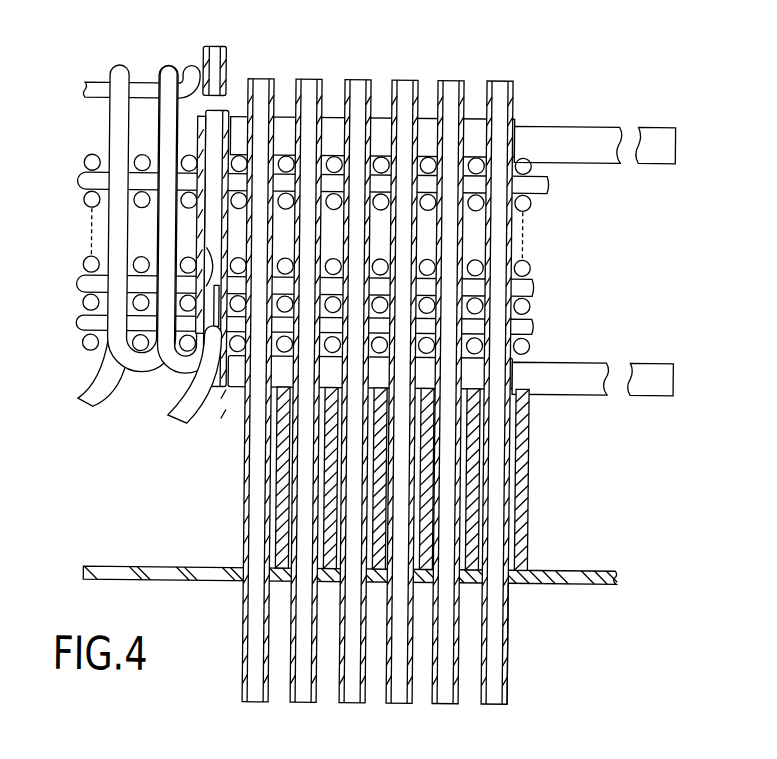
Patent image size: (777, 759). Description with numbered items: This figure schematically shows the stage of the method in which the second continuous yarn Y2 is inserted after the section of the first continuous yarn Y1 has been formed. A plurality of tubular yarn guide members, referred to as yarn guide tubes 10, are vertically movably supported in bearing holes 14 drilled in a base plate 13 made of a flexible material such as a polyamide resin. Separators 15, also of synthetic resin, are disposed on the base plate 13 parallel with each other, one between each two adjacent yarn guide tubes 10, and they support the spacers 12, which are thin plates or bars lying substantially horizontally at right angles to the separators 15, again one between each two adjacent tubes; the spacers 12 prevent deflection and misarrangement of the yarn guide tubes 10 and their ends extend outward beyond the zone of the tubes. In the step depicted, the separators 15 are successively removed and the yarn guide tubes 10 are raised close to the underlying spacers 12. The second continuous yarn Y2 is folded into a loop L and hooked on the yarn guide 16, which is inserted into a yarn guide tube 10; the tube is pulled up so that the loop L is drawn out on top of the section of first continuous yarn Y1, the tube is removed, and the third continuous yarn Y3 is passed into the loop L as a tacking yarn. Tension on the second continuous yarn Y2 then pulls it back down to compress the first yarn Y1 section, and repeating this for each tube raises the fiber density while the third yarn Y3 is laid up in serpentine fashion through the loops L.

The yarn guide tube 10 is at (226, 58).
The spacer 12 is at (647, 136).
The base plate 13 is at (576, 571).
The bearing hole 14 is at (515, 597).
The separator 15 is at (529, 447).
The yarn guide 16 is at (205, 249).
The loop L is at (118, 68).
The first continuous yarn Y1 is at (541, 187).
The second continuous yarn Y2 is at (188, 428).
The third continuous yarn Y3 is at (90, 87).